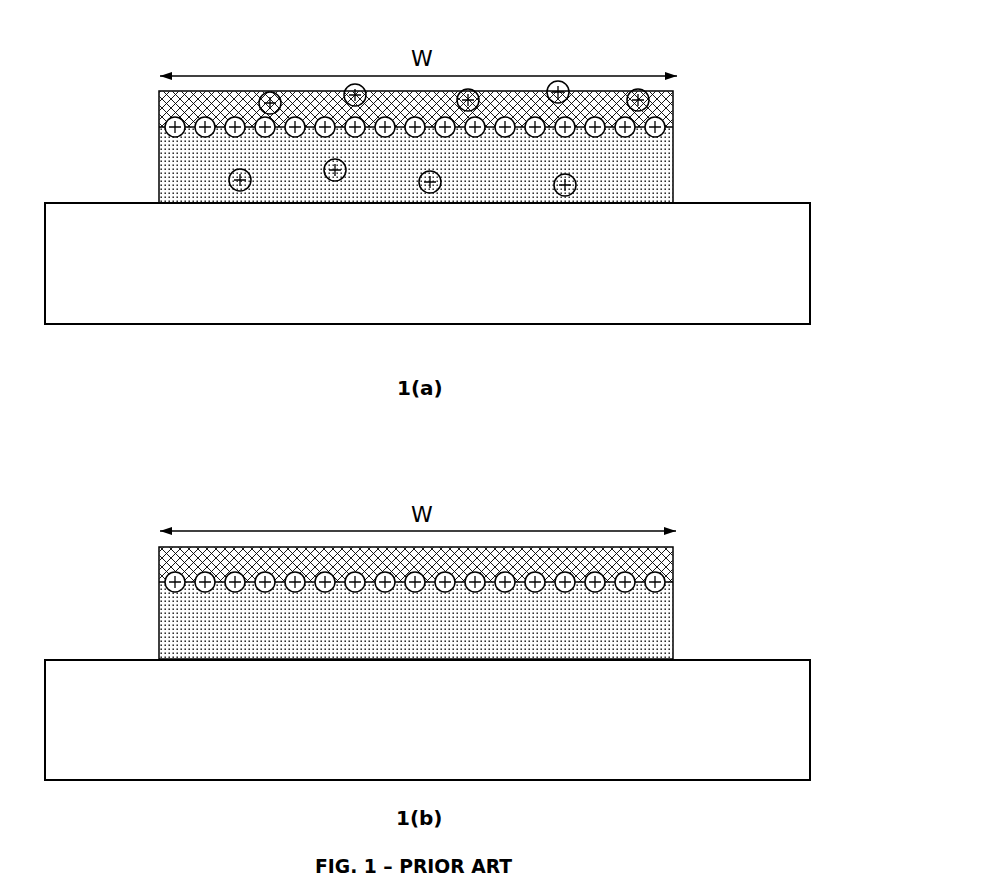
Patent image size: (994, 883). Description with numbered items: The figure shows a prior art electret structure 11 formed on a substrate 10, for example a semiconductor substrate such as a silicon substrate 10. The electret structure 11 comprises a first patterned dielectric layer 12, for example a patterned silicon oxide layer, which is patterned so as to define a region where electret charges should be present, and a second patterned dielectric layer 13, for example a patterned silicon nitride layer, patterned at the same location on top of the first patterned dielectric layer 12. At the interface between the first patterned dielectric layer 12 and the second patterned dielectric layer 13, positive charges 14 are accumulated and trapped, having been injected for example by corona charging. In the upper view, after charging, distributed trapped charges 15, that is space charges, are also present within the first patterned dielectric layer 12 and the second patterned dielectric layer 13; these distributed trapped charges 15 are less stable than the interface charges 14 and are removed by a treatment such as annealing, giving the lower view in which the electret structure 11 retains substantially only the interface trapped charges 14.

The substrate 10 is at (427, 491).
The electret structure 11 is at (681, 91).
The first patterned dielectric layer 12 is at (183, 170).
The second patterned dielectric layer 13 is at (178, 100).
The positive charges 14 is at (164, 124).
The distributed trapped charges 15 is at (566, 173).